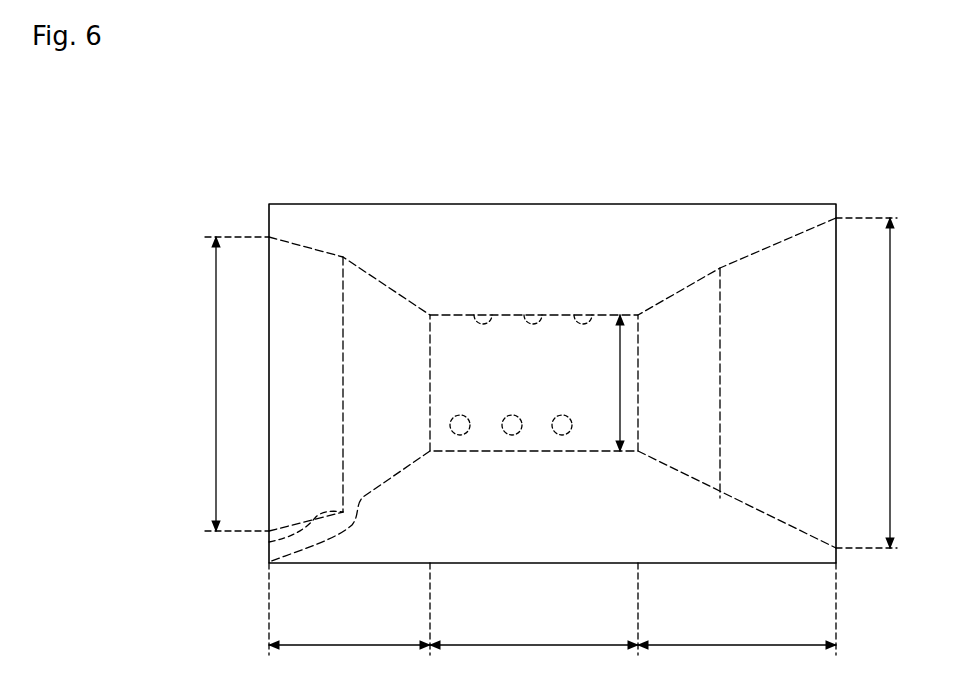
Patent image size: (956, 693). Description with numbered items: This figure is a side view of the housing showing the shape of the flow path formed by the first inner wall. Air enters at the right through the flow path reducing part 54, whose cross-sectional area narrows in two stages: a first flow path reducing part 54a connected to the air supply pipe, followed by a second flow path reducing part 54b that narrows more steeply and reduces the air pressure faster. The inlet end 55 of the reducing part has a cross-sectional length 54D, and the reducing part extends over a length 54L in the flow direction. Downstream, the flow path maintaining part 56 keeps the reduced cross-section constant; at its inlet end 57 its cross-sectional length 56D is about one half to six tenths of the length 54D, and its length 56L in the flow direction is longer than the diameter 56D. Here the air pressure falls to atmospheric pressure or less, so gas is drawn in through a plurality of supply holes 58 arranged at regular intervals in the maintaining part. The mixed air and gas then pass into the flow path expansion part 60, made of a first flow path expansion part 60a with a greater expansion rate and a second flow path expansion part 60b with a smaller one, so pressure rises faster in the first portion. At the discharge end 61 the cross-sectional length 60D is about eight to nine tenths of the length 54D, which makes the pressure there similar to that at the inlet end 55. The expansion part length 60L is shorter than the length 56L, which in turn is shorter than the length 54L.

The flow path reducing part 54 is at (794, 130).
The first flow path reducing part 54a is at (773, 247).
The second flow path reducing part 54b is at (688, 287).
The inlet end of the flow path reducing part 55 is at (836, 548).
The flow path maintaining part 56 is at (570, 322).
The inlet end of the flow path maintaining part 57 is at (637, 315).
The supply holes 58 is at (457, 415).
The flow path expansion part 60 is at (178, 577).
The first flow path expansion part 60a is at (269, 562).
The second flow path expansion part 60b is at (269, 542).
The discharge end of the flow path expansion part 61 is at (269, 531).
The length of the cross-sectional area at the discharge end of the flow path expansi 60D is at (210, 384).
The length of the cross-sectional area at the inlet end of the flow path reducing pa 54D is at (867, 383).
The length of the cross-sectional area at the inlet end of the flow path maintaining 56D is at (595, 383).
The length of the flow path expansion part 60L is at (349, 619).
The length of the flow path maintaining part 56L is at (534, 619).
The length of the flow path reducing part 54L is at (737, 619).